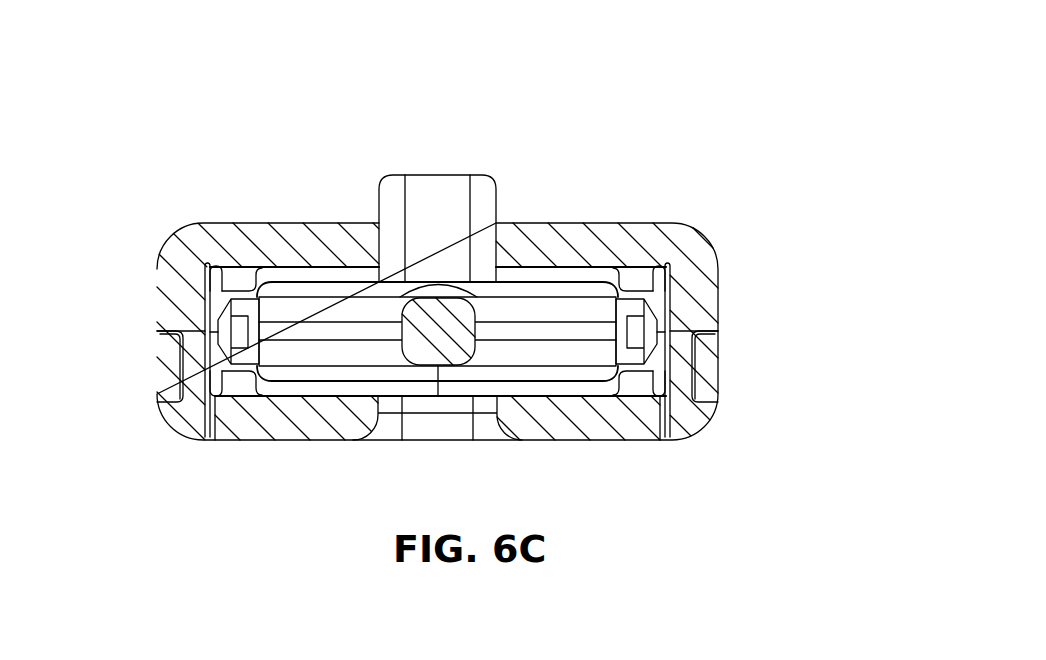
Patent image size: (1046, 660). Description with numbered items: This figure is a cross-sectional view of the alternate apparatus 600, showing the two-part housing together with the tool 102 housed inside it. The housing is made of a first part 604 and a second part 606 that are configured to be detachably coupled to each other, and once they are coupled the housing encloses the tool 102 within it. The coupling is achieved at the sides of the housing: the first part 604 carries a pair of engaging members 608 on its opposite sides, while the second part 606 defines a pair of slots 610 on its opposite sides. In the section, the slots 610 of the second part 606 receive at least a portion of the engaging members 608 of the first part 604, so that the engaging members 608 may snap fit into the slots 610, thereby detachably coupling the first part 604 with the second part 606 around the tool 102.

The apparatus 600 is at (451, 269).
The tool 102 is at (482, 194).
The first part 604 is at (486, 301).
The second part 606 is at (467, 441).
The engaging members 608 is at (385, 406).
The slots 610 is at (392, 392).